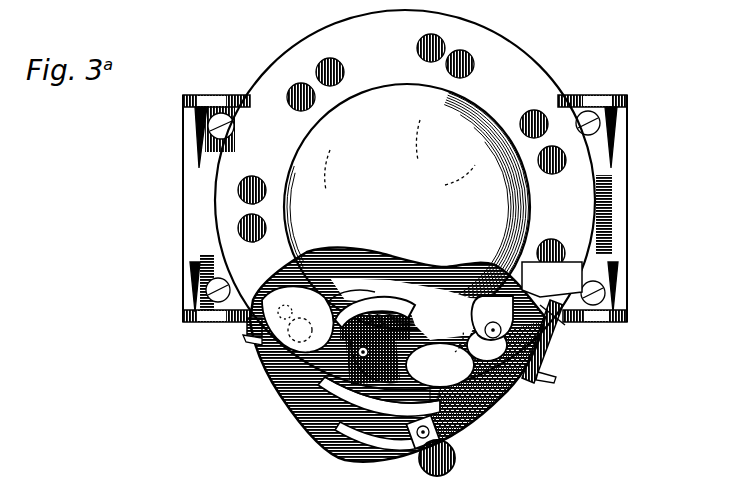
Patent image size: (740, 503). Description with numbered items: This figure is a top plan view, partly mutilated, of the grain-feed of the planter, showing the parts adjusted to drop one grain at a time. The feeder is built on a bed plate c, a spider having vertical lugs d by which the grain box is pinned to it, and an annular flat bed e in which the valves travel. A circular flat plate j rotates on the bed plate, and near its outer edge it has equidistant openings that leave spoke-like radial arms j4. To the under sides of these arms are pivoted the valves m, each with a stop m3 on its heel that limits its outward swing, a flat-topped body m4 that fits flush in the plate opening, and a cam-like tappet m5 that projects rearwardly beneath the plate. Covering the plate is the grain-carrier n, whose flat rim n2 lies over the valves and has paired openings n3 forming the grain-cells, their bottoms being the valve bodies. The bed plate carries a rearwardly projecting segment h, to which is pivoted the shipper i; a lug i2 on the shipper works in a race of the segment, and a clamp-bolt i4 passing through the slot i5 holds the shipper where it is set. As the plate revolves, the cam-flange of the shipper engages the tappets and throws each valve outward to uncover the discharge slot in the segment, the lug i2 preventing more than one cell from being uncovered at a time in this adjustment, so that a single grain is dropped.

The bed plate c is at (184, 246).
The vertical lugs d is at (183, 100).
The grain-carrier n is at (407, 207).
The rim n2 is at (405, 200).
The openings n3 is at (409, 146).
The bed e is at (556, 330).
The circular flat plate j is at (353, 303).
The radial arms j4 is at (550, 347).
The shipper i is at (429, 470).
The lug i2 is at (398, 417).
The clamp-bolt i4 is at (413, 457).
The slot i5 is at (360, 447).
The valves m is at (426, 358).
The stop m3 is at (300, 363).
The body m4 is at (490, 423).
The tappet m5 is at (440, 315).
The segment h is at (296, 410).